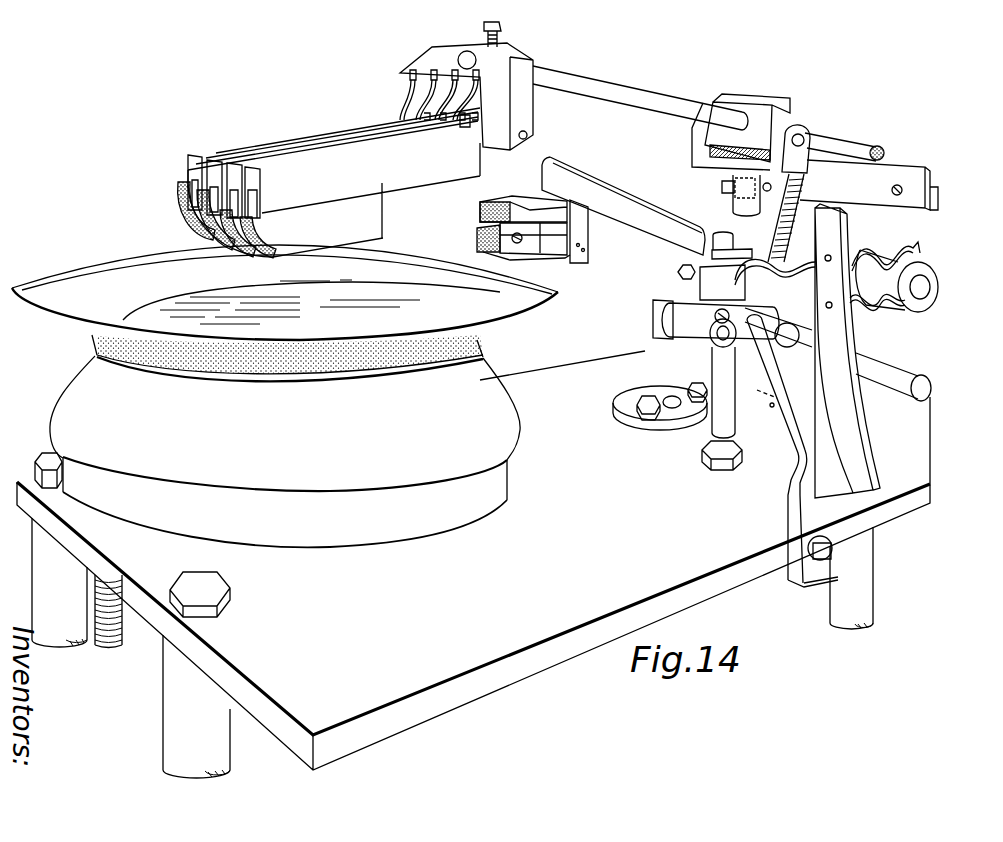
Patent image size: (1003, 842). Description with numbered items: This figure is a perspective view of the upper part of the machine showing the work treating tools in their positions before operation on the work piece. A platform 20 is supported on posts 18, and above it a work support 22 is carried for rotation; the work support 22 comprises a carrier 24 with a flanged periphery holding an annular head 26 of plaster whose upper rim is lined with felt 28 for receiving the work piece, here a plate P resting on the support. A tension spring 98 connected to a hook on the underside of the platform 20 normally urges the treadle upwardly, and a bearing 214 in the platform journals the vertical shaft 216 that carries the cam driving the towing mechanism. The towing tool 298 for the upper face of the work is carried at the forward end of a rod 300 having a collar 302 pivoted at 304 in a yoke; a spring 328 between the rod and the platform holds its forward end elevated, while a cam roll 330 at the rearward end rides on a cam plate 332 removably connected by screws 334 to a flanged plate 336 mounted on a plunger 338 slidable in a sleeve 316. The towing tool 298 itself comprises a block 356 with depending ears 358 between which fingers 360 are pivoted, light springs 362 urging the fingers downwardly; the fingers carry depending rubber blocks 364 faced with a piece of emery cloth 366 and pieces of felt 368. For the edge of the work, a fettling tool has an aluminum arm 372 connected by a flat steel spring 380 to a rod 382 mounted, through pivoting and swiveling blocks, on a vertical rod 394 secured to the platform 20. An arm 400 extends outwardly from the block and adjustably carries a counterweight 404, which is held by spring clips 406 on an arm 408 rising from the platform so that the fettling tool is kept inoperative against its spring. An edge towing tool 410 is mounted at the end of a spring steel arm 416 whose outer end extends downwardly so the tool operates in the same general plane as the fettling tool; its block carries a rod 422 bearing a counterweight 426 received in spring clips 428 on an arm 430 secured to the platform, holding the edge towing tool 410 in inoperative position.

The posts 18 is at (163, 723).
The platform 20 is at (540, 571).
The work support 22 is at (47, 376).
The carrier 24 is at (332, 533).
The annular head 26 is at (387, 459).
The felt 28 is at (92, 342).
The tension spring 98 is at (120, 633).
The bearing 214 is at (622, 420).
The vertical shaft 216 is at (672, 410).
The towing tool 298 is at (266, 123).
The rod 300 is at (634, 92).
The collar 302 is at (770, 97).
The pivot 304 is at (805, 137).
The sleeve 316 is at (733, 216).
The spring 328 is at (802, 187).
The cam roll 330 is at (878, 146).
The cam plate 332 is at (915, 160).
The screws 334 is at (905, 188).
The flanged plate 336 is at (936, 207).
The plunger 338 is at (722, 188).
The block 356 is at (440, 53).
The depending ears 358 is at (496, 140).
The fingers 360 is at (243, 167).
The light springs 362 is at (388, 122).
The rubber blocks 364 is at (360, 220).
The emery cloth 366 is at (290, 252).
The felt 368 is at (197, 180).
The arm 372 is at (555, 250).
The flat steel spring 380 is at (612, 283).
The rod 382 is at (693, 333).
The vertical rod 394 is at (710, 432).
The arm 400 is at (908, 380).
The counterweight 404 is at (808, 365).
The spring clips 406 is at (789, 323).
The arm 408 is at (780, 450).
The edge towing tool 410 is at (530, 183).
The spring steel arm 416 is at (624, 212).
The rod 422 is at (922, 281).
The counterweight 426 is at (931, 299).
The spring clips 428 is at (880, 247).
The arm 430 is at (850, 338).
The plate P is at (52, 285).